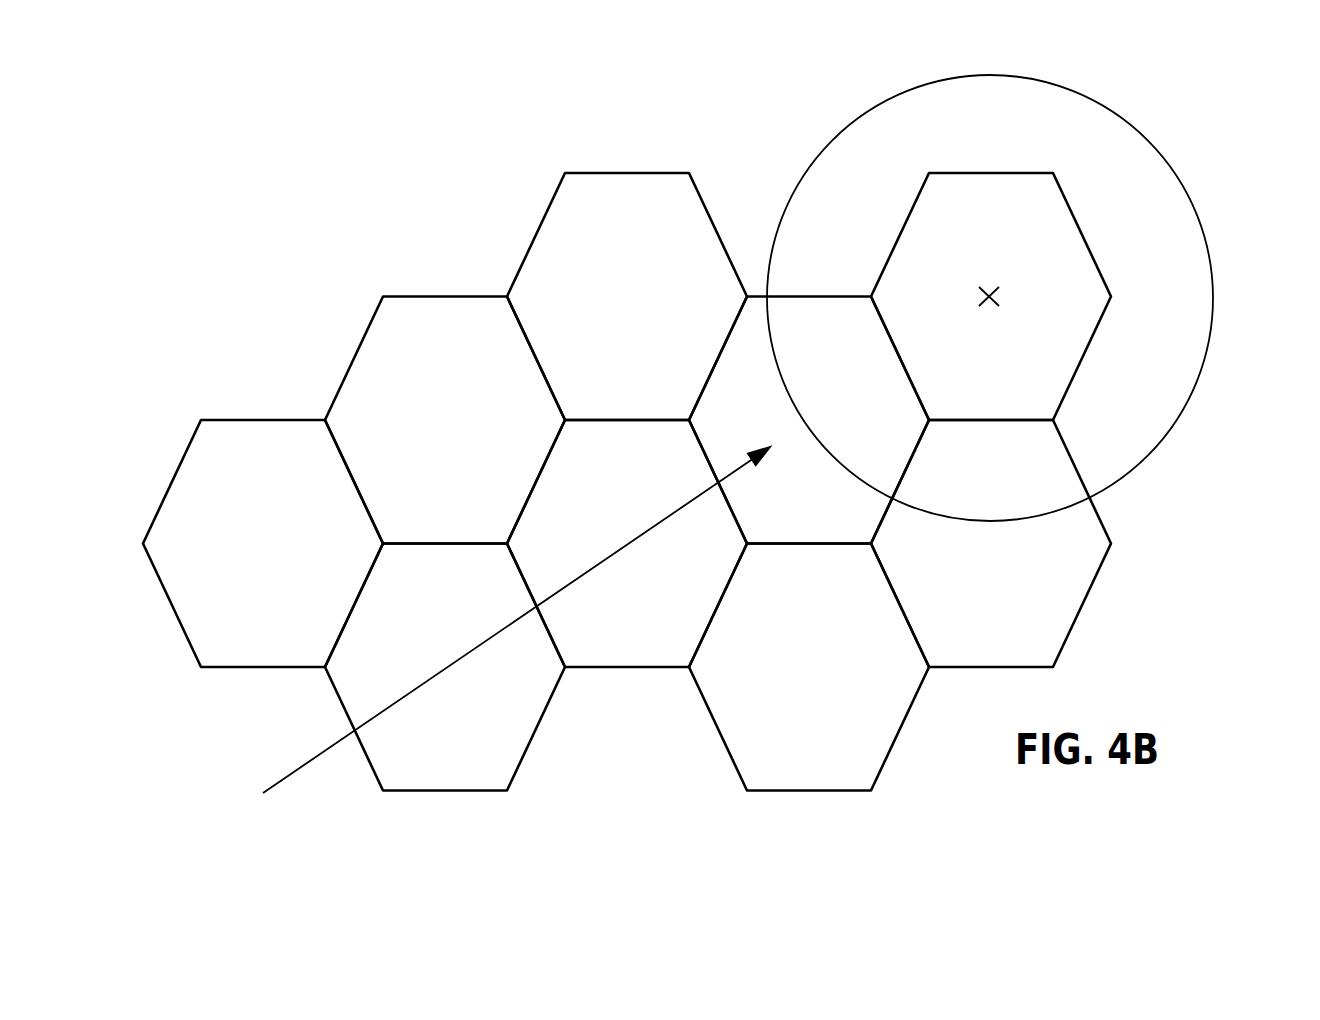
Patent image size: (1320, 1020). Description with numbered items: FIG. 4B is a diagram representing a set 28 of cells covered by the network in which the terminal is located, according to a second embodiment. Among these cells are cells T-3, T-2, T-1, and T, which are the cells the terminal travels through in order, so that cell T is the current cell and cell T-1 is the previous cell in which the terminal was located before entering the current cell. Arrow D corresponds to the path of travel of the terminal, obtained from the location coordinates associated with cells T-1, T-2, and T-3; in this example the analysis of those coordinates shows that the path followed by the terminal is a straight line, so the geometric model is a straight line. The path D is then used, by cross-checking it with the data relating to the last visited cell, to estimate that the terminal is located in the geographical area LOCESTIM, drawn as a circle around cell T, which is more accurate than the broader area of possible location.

The set of cells 28 is at (364, 340).
The cell T is at (991, 296).
The cell T-1 is at (809, 653).
The cell T-2 is at (627, 544).
The cell T-3 is at (445, 668).
The estimated location area LOCESTIM is at (1195, 97).
The path of travel D is at (287, 780).